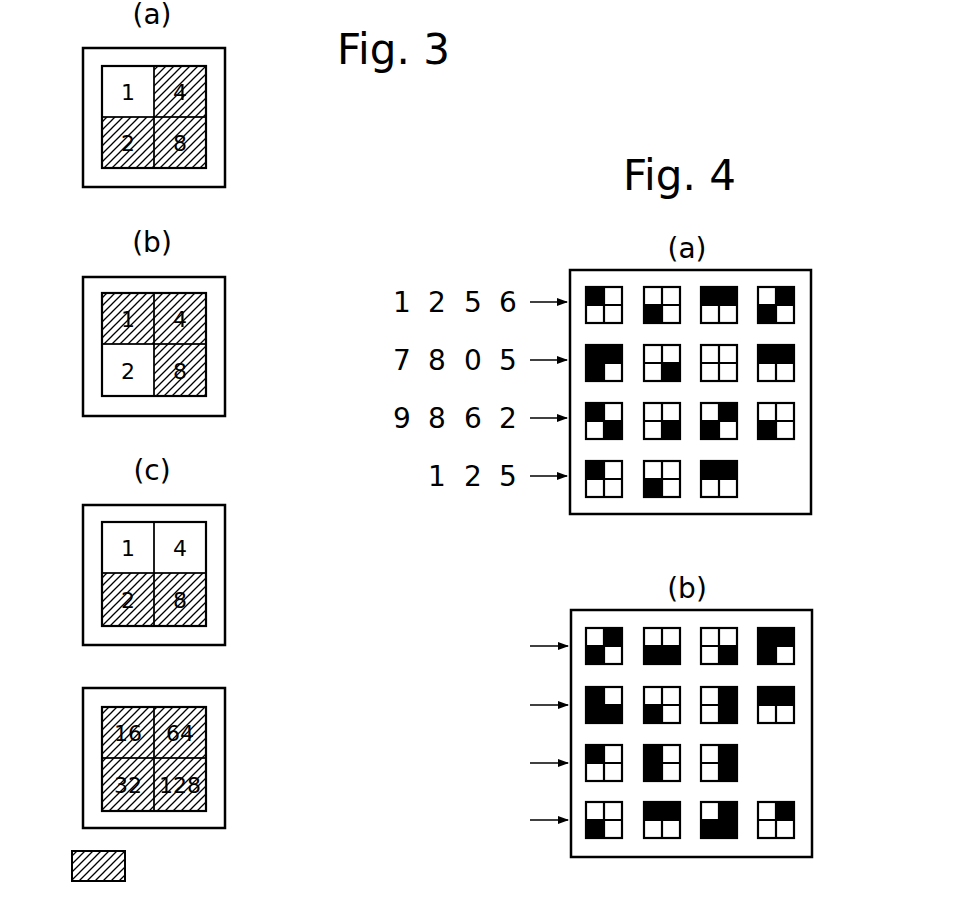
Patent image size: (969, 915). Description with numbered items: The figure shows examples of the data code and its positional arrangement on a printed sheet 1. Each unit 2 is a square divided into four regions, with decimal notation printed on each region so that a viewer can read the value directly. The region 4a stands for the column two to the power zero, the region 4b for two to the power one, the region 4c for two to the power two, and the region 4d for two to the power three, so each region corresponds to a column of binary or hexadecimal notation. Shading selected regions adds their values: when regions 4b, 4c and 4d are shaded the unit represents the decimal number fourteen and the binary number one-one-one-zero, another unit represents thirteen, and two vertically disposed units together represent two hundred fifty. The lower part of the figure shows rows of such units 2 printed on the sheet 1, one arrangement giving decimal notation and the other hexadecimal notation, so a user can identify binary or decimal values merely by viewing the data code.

In FIG. 4, the sheet 1 is at (812, 757).
In FIG. 3, the unit 2 is at (231, 63).
In FIG. 4, the unit 2 is at (797, 300).
In FIG. 3, the region 4a is at (99, 319).
In FIG. 3, the region 4b is at (99, 371).
In FIG. 3, the region 4c is at (209, 319).
In FIG. 3, the region 4d is at (209, 371).